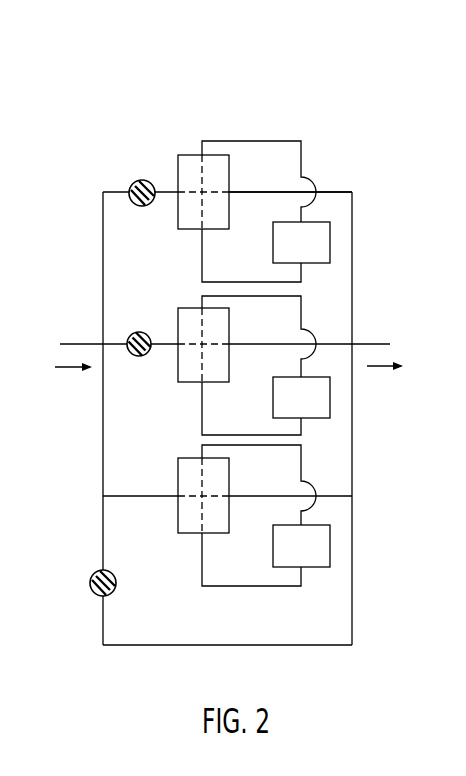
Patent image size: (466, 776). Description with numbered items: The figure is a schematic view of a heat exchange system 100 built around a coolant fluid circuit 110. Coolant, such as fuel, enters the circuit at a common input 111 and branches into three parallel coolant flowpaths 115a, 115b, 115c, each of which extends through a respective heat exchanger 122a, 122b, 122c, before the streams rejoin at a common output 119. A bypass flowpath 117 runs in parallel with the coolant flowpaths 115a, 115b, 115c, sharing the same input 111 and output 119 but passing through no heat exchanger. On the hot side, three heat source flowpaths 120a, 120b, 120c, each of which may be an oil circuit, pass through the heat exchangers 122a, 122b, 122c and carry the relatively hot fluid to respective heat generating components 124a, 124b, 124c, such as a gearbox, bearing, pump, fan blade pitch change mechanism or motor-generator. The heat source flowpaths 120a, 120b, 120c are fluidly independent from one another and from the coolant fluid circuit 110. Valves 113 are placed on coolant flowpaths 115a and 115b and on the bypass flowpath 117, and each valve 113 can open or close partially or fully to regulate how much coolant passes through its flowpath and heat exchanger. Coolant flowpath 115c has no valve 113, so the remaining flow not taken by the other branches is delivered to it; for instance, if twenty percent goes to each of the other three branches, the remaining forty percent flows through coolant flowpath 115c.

The heat exchange system 100 is at (182, 115).
The coolant fluid circuit 110 is at (100, 252).
The input 111 is at (70, 367).
The valve 113 is at (133, 184).
The coolant flowpath 115a is at (282, 187).
The coolant flowpath 115b is at (282, 340).
The coolant flowpath 115c is at (338, 495).
The bypass flowpath 117 is at (327, 645).
The output 119 is at (378, 367).
The heat source flowpath 120a is at (288, 141).
The heat source flowpath 120b is at (302, 302).
The heat source flowpath 120c is at (301, 587).
The heat exchanger 122a is at (177, 165).
The heat exchanger 122b is at (177, 320).
The heat exchanger 122c is at (177, 470).
The heat generating component 124a is at (322, 222).
The heat generating component 124b is at (330, 410).
The heat generating component 124c is at (330, 557).